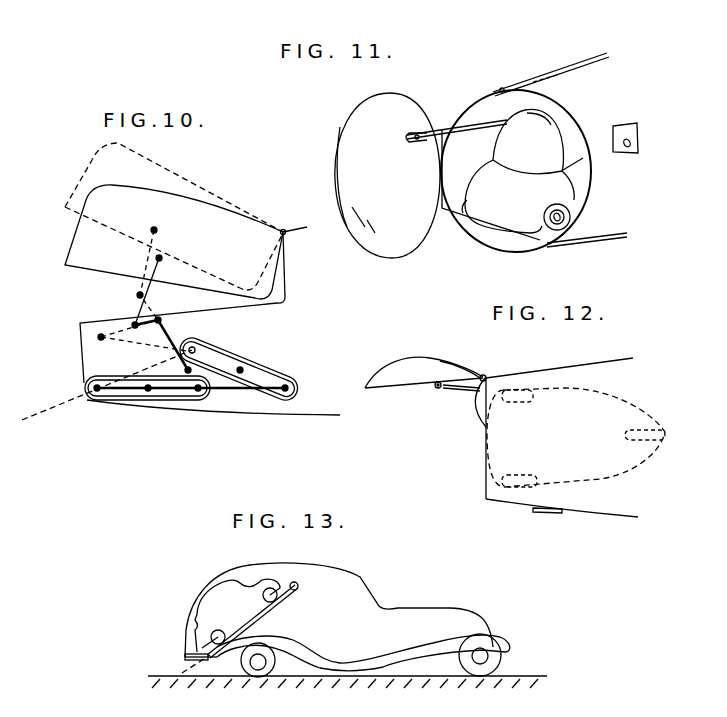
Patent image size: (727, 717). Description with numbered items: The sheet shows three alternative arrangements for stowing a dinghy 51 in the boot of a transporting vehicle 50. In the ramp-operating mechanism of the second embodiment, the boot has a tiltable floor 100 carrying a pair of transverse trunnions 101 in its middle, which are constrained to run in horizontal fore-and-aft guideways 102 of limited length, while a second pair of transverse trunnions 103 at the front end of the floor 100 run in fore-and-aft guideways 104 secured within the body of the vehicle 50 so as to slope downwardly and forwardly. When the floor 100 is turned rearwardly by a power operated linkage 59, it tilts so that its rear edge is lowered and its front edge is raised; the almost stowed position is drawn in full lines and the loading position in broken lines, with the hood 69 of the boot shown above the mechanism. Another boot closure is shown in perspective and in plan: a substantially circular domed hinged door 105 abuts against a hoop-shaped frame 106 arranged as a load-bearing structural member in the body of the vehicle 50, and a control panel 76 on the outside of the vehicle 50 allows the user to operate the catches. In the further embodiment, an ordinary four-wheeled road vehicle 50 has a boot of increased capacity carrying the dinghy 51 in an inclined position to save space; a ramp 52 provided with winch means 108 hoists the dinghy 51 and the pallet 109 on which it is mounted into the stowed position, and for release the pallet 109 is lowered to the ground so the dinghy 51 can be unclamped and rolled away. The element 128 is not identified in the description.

In FIG. 10, the transporting vehicle 50 is at (273, 313).
In FIG. 11, the transporting vehicle 50 is at (578, 85).
In FIG. 12, the transporting vehicle 50 is at (562, 377).
In FIG. 13, the transporting vehicle 50 is at (363, 590).
In FIG. 11, the dinghy 51 is at (522, 171).
In FIG. 12, the dinghy 51 is at (572, 470).
In FIG. 13, the dinghy 51 is at (222, 597).
In FIG. 13, the ramp 52 is at (217, 650).
In FIG. 10, the power operated linkage 59 is at (165, 318).
In FIG. 10, the hood 69 is at (207, 227).
In FIG. 11, the control panel 76 is at (633, 153).
In FIG. 12, the control panel 76 is at (547, 514).
In FIG. 10, the tiltable floor 100 is at (237, 390).
In FIG. 10, the transverse trunnions 101 is at (82, 383).
In FIG. 10, the horizontal fore-and-aft guideways 102 is at (112, 402).
In FIG. 10, the second pair of transverse trunnions 103 is at (200, 393).
In FIG. 10, the fore-and-aft guideways 104 is at (223, 350).
In FIG. 11, the domed hinged door 105 is at (357, 110).
In FIG. 12, the domed hinged door 105 is at (385, 370).
In FIG. 11, the hoop-shaped frame 106 is at (502, 88).
In FIG. 12, the hoop-shaped frame 106 is at (483, 375).
In FIG. 13, the winch means 108 is at (300, 583).
In FIG. 13, the pallet 109 is at (203, 655).
In FIG. 11, the connecting rod 128 is at (467, 127).
In FIG. 12, the connecting rod 128 is at (462, 392).